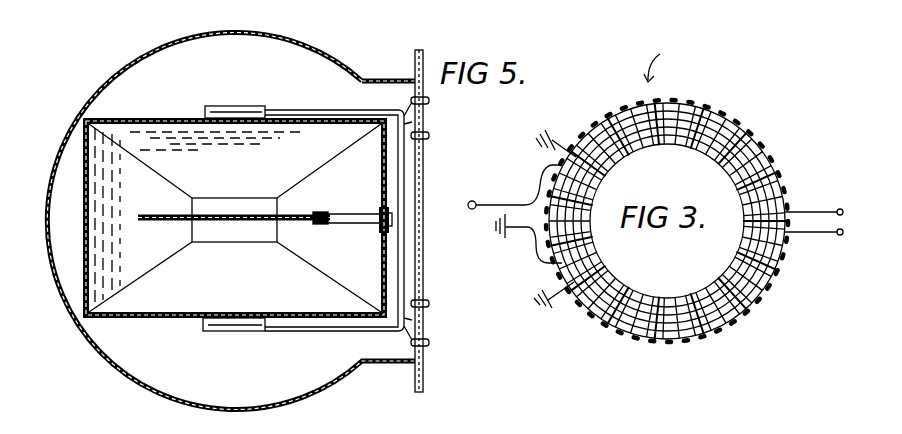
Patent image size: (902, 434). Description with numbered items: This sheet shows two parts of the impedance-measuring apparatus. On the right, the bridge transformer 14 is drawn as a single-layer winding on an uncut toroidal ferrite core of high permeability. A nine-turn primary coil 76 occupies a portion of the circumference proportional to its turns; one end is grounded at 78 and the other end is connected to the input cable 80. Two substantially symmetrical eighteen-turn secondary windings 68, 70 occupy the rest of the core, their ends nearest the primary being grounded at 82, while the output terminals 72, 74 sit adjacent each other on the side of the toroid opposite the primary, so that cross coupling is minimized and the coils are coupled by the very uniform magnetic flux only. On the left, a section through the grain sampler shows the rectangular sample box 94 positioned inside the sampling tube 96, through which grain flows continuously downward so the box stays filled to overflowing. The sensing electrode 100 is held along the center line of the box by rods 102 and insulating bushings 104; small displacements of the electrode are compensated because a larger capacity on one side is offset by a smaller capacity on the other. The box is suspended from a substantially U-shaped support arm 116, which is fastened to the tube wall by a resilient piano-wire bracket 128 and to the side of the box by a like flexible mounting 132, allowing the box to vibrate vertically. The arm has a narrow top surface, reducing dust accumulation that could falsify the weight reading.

In FIG. 3, the transformer 14 is at (663, 66).
In FIG. 3, the secondary winding 68 is at (667, 229).
In FIG. 3, the secondary winding 70 is at (740, 326).
In FIG. 3, the output terminal 72 is at (843, 190).
In FIG. 3, the output terminal 74 is at (842, 236).
In FIG. 3, the primary coil 76 is at (597, 213).
In FIG. 3, the ground connection 78 is at (520, 230).
In FIG. 3, the input cable 80 is at (472, 173).
In FIG. 3, the ground connection 82 is at (566, 114).
In FIG. 5, the sample box 94 is at (165, 118).
In FIG. 5, the sampling tube 96 is at (222, 34).
In FIG. 5, the electrode 100 is at (178, 222).
In FIG. 5, the rod 102 is at (358, 223).
In FIG. 5, the insulating bushing 104 is at (378, 233).
In FIG. 5, the U-shaped support arm 116 is at (306, 114).
In FIG. 5, the support bracket 128 is at (410, 116).
In FIG. 5, the mounting 132 is at (258, 106).